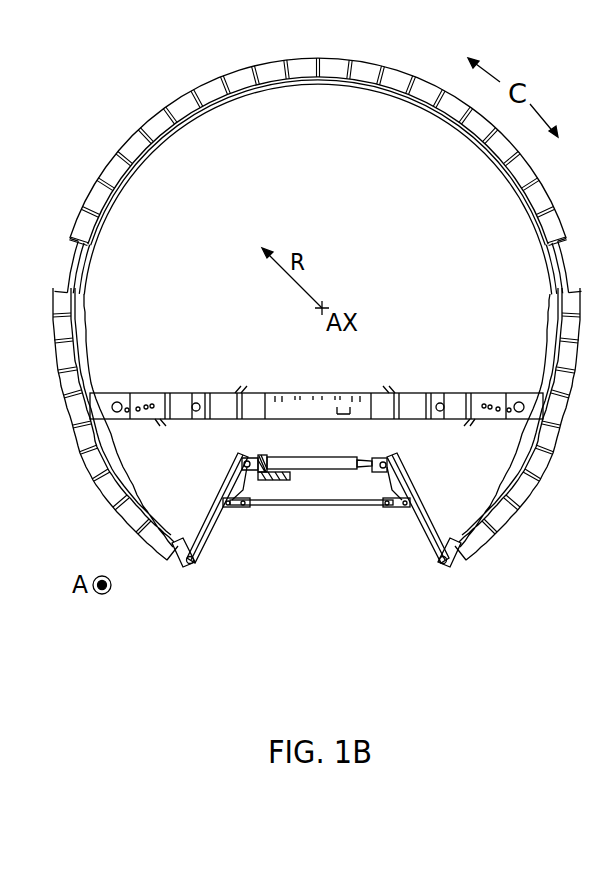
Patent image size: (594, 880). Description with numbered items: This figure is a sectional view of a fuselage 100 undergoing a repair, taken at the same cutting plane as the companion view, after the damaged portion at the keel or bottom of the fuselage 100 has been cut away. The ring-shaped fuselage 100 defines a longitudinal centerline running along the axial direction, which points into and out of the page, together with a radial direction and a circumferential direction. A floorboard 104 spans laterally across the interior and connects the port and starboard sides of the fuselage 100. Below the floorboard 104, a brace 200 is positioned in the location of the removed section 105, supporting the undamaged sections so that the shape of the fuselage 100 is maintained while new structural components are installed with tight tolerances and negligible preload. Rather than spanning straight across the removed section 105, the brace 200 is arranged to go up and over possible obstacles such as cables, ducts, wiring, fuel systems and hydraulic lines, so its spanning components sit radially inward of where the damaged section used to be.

The fuselage 100 is at (148, 127).
The floorboard 104 is at (220, 392).
The removed section 105 is at (246, 572).
The brace 200 is at (327, 527).